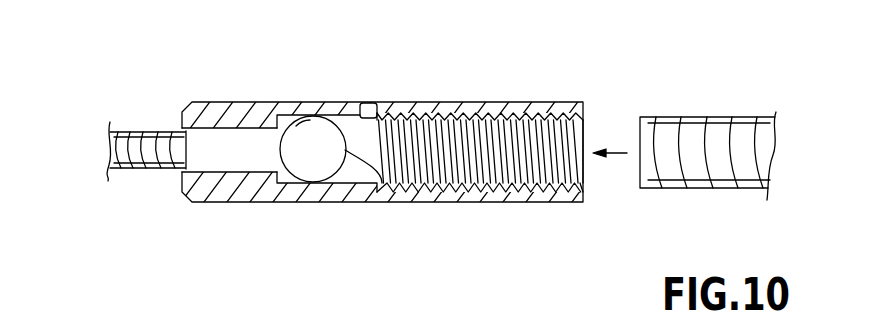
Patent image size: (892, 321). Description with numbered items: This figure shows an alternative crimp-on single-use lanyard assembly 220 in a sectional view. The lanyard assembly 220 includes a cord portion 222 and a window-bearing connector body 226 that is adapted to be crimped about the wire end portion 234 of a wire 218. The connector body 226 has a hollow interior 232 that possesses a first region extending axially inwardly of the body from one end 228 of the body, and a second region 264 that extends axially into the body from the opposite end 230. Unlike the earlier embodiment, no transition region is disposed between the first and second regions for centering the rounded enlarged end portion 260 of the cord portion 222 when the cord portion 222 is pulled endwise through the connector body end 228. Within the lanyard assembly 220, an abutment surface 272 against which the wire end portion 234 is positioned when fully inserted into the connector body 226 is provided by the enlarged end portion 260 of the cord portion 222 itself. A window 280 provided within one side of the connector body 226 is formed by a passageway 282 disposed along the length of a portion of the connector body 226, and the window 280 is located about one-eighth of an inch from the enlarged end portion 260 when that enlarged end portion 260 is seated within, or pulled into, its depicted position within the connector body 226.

The lanyard assembly 220 is at (180, 73).
The cord portion 222 is at (147, 131).
The connector body 226 is at (540, 102).
The connector body end 228 is at (181, 181).
The enlarged end portion 260 is at (313, 116).
The abutment surface 272 is at (382, 183).
The window 280 is at (374, 103).
The passageway 282 is at (364, 101).
The second region 264 is at (475, 185).
The hollow interior 232 is at (538, 186).
The opposite end 230 is at (584, 195).
The wire 218 is at (758, 117).
The wire end portion 234 is at (713, 117).